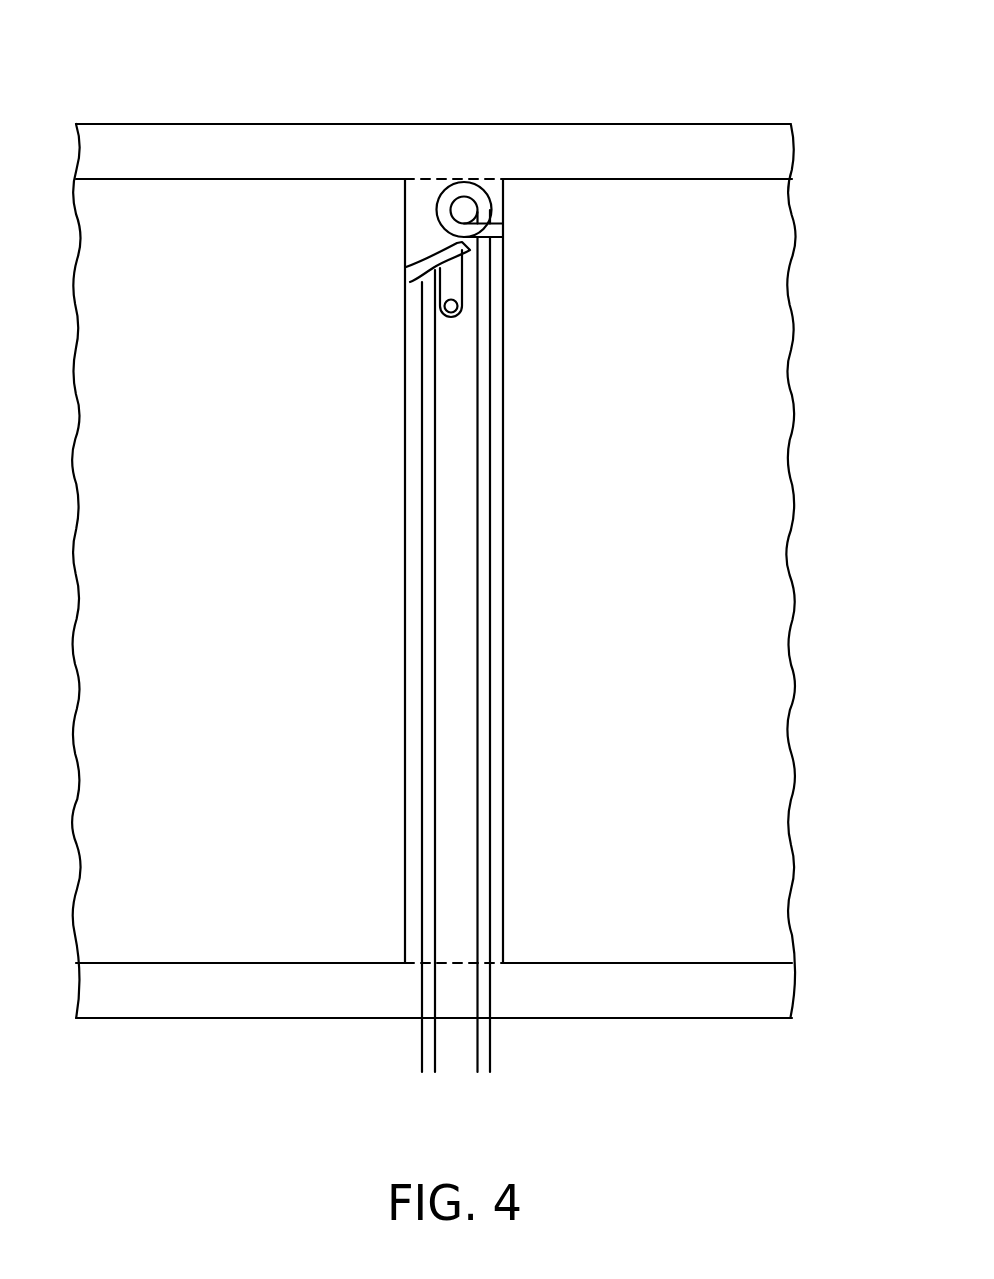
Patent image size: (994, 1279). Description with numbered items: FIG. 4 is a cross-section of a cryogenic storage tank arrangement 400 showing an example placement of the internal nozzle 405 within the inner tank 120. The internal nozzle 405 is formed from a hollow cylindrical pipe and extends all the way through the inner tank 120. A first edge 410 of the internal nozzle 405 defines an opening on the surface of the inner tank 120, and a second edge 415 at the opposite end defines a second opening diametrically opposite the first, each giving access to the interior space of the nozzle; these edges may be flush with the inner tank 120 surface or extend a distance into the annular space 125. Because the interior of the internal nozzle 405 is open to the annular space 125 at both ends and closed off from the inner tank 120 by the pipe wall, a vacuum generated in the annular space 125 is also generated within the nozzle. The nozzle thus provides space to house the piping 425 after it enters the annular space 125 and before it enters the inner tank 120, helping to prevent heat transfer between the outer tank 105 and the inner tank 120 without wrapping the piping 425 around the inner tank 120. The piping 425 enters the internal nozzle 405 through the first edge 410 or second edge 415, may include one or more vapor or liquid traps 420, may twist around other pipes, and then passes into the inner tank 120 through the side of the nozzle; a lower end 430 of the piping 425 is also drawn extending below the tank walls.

The fluid delivery assembly 400 is at (410, 28).
The outer tank 105 is at (593, 125).
The annular space 125 is at (748, 150).
The inner tank 120 is at (590, 180).
The internal nozzle 405 is at (505, 457).
The second edge 415 is at (438, 179).
The first edge 410 is at (450, 962).
The vapor and/or liquid trap 420 is at (438, 216).
The piping 425 is at (433, 602).
The tubing outlet end 430 is at (490, 1043).